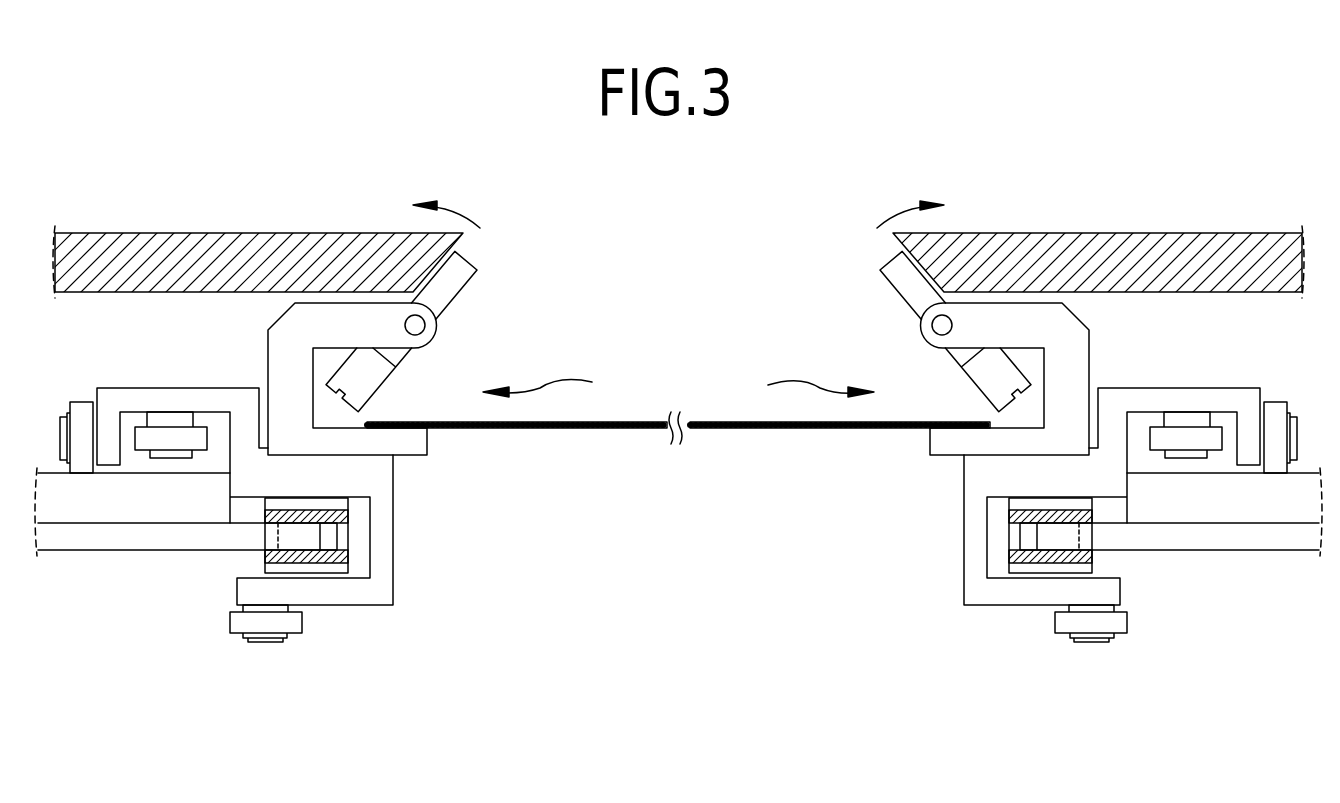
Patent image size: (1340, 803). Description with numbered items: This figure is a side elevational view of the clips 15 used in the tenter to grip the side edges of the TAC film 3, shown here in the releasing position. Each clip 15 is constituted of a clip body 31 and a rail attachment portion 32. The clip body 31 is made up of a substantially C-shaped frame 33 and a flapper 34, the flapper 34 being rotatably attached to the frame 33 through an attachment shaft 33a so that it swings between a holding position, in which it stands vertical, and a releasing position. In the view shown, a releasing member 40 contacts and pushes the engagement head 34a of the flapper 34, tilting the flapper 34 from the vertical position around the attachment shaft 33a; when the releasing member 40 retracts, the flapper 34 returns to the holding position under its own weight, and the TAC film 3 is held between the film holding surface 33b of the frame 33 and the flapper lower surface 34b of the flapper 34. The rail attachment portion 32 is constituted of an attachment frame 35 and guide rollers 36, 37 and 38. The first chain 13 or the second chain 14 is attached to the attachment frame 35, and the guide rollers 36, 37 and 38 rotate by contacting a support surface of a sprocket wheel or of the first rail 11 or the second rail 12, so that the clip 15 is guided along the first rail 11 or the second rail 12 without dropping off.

The TAC film 3 is at (653, 421).
The first rail 11 is at (1275, 542).
The second rail 12 is at (78, 542).
The first chain 13 is at (1028, 534).
The second chain 14 is at (325, 538).
The clip 15 is at (436, 661).
The clip body 31 is at (678, 386).
The rail attachment portion 32 is at (178, 567).
The frame 33 is at (290, 322).
The attachment shaft 33a is at (425, 325).
The film holding surface 33b is at (352, 429).
The flapper 34 is at (392, 363).
The engagement head 34a is at (467, 263).
The flapper lower surface 34b is at (356, 408).
The attachment frame 35 is at (385, 563).
The guide roller 36 is at (287, 623).
The guide roller 37 is at (80, 400).
The guide roller 38 is at (175, 436).
The releasing member 40 is at (228, 245).